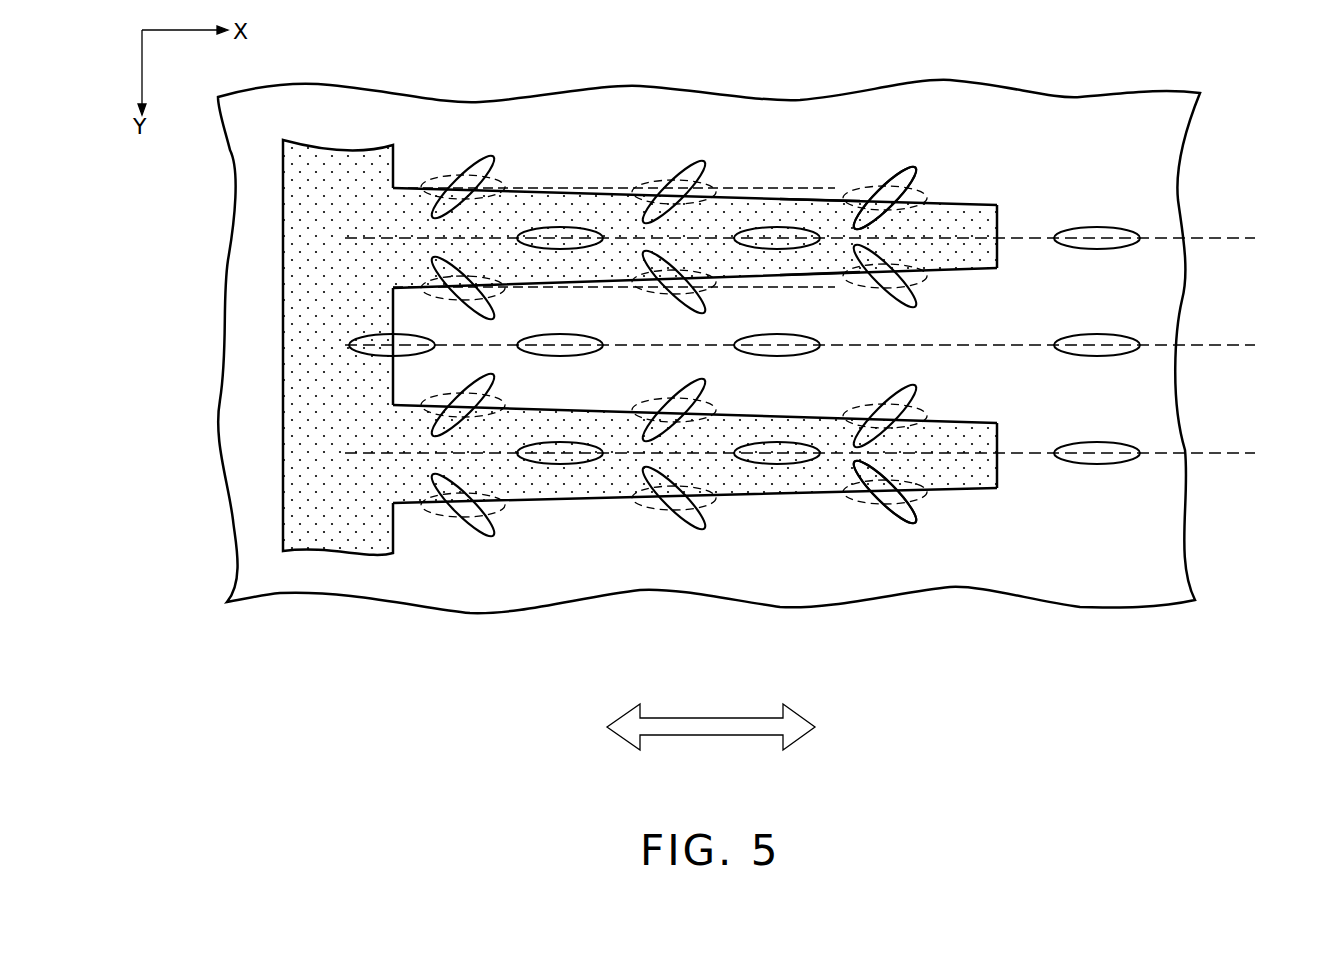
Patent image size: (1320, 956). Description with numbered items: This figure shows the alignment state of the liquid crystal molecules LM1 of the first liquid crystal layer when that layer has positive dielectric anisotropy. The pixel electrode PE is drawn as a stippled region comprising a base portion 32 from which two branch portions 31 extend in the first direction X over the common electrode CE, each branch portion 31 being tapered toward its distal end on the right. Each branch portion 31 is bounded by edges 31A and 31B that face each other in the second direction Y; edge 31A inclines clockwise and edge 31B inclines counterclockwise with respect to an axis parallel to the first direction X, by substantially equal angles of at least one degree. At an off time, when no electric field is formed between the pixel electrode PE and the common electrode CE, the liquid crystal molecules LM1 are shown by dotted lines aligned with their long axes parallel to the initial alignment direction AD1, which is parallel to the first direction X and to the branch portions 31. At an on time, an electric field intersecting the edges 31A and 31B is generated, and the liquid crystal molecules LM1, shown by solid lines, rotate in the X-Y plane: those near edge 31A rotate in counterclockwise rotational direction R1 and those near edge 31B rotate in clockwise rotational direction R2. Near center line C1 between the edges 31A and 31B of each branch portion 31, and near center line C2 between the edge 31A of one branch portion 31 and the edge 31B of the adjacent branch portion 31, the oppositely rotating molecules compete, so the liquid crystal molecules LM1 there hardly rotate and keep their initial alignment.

The base portion of pixel electrode 32 is at (345, 165).
The branch portion 31 is at (749, 361).
The edge 31A is at (768, 188).
The edge 31B is at (960, 279).
The liquid crystal molecule LM1 is at (935, 612).
The rotational direction R1 is at (927, 166).
The rotational direction R2 is at (925, 517).
The center line C1 is at (1232, 238).
The center line C2 is at (1232, 345).
The pixel electrode PE is at (618, 352).
The common electrode CE is at (262, 575).
The initial alignment direction AD1 is at (708, 737).